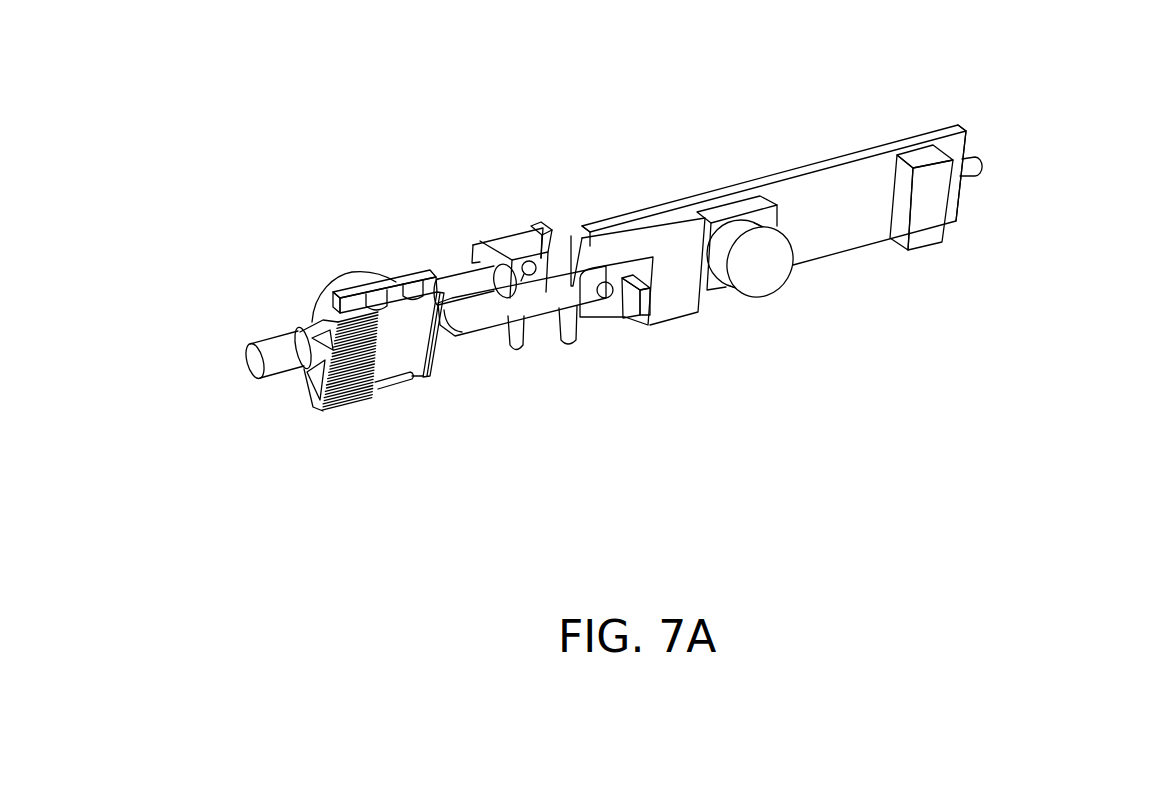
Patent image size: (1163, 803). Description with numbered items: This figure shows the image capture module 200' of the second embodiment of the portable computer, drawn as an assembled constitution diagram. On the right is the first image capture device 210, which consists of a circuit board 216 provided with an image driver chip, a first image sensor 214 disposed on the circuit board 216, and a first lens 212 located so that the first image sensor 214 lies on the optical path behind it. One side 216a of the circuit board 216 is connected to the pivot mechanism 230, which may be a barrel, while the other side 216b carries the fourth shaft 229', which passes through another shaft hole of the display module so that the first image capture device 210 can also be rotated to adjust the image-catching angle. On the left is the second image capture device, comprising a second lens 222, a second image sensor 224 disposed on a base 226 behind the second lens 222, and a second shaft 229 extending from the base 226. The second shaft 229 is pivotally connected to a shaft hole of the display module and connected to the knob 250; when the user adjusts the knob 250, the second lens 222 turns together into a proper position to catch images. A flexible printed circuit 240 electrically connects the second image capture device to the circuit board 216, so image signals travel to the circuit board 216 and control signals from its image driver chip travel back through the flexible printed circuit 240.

The image capture module 200' is at (664, 253).
The first image capture device 210 is at (799, 176).
The first lens 212 is at (753, 220).
The first image sensor 214 is at (725, 207).
The circuit board 216 is at (810, 205).
The side of the circuit board 216a is at (577, 236).
The another side of the circuit board 216b is at (967, 148).
The second lens 222 is at (348, 280).
The second image sensor 224 is at (415, 317).
The base 226 is at (438, 306).
The second shaft 229 is at (258, 326).
The fourth shaft 229' is at (1007, 145).
The pivot mechanism 230 is at (465, 287).
The flexible printed circuit 240 is at (538, 313).
The knob 250 is at (353, 380).